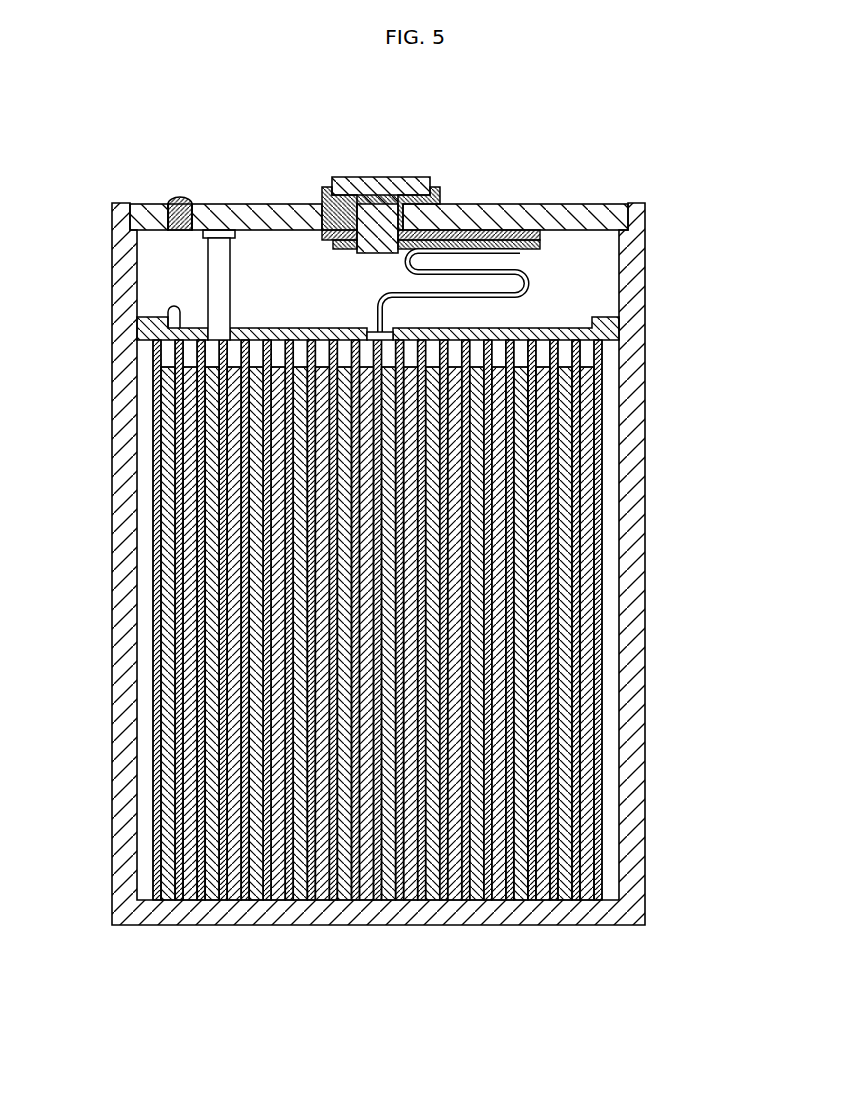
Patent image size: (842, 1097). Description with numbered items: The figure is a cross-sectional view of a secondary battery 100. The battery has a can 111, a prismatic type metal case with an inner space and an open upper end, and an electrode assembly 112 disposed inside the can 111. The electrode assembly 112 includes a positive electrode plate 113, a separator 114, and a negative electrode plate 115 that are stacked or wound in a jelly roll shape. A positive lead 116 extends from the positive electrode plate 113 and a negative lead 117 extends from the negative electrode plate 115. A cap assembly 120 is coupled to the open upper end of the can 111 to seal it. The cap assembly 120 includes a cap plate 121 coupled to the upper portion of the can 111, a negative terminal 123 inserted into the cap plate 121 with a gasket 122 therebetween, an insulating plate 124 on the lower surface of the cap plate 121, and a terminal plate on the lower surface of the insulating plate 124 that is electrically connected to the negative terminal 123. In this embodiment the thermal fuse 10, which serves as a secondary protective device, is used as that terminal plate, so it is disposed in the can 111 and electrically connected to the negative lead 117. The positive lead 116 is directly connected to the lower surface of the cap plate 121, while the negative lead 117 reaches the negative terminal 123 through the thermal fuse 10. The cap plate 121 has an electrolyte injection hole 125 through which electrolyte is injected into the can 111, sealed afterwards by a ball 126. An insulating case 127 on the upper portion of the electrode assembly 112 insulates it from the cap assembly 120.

The secondary battery 100 is at (77, 118).
The can 111 is at (636, 383).
The electrode assembly 112 is at (458, 620).
The positive electrode plate 113 is at (585, 490).
The separator 114 is at (576, 527).
The negative electrode plate 115 is at (563, 590).
The positive lead 116 is at (215, 258).
The negative lead 117 is at (519, 284).
The cap assembly 120 is at (381, 190).
The cap plate 121 is at (251, 212).
The gasket 122 is at (435, 188).
The negative terminal 123 is at (385, 187).
The insulating plate 124 is at (500, 236).
The thermal fuse 10 is at (541, 246).
The electrolyte injection hole 125 is at (172, 200).
The ball 126 is at (190, 198).
The insulating case 127 is at (166, 319).